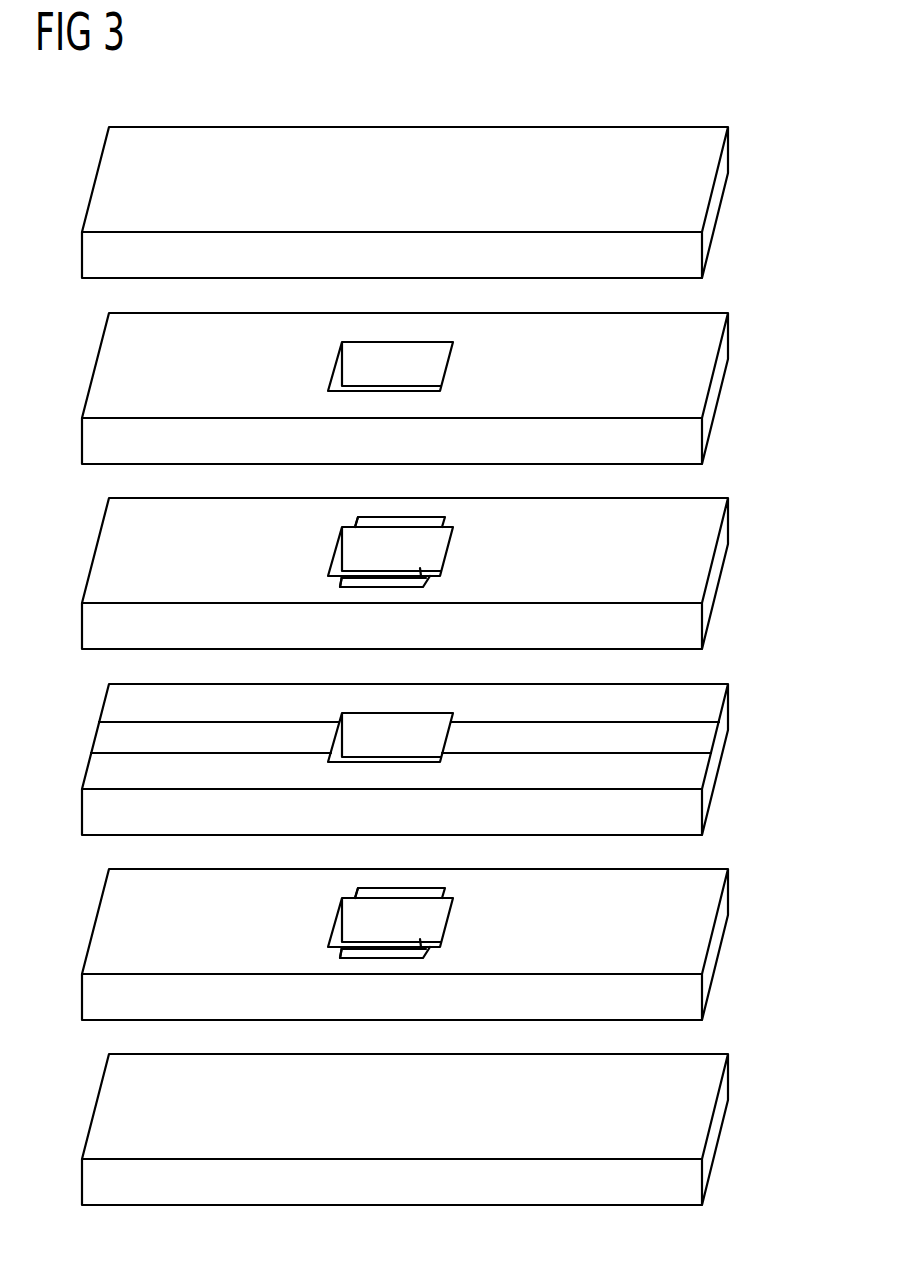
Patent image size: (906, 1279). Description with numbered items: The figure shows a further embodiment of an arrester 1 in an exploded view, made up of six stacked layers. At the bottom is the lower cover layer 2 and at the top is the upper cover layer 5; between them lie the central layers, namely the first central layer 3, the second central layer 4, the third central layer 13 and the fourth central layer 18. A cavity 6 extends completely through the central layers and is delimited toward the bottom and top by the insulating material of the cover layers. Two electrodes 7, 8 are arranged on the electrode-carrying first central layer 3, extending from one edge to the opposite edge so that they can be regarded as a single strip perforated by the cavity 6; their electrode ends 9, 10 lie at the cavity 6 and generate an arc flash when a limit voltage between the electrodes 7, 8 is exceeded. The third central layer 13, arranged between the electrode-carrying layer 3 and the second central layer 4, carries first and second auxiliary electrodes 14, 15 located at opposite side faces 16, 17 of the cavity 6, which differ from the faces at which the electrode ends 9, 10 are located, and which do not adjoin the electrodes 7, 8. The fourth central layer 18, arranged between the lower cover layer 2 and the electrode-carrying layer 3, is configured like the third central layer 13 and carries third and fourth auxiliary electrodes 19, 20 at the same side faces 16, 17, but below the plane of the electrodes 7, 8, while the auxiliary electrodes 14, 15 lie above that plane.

The arrester 1 is at (688, 81).
The lower cover layer 2 is at (697, 1137).
The first central layer 3 is at (698, 768).
The second central layer 4 is at (697, 398).
The upper cover layer 5 is at (697, 211).
The cavity 6 is at (430, 367).
The electrode 7 is at (105, 738).
The electrode 8 is at (712, 732).
The electrode end 9 is at (338, 726).
The electrode end 10 is at (452, 725).
The third central layer 13 is at (697, 583).
The first auxiliary electrode 14 is at (343, 580).
The second auxiliary electrode 15 is at (367, 516).
The side face 16 is at (433, 578).
The side face 17 is at (437, 526).
The fourth central layer 18 is at (697, 952).
The third auxiliary electrode 19 is at (343, 950).
The fourth auxiliary electrode 20 is at (367, 888).